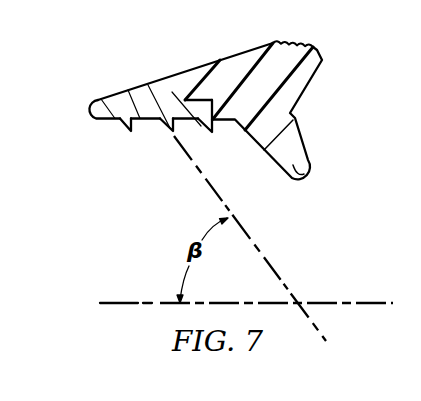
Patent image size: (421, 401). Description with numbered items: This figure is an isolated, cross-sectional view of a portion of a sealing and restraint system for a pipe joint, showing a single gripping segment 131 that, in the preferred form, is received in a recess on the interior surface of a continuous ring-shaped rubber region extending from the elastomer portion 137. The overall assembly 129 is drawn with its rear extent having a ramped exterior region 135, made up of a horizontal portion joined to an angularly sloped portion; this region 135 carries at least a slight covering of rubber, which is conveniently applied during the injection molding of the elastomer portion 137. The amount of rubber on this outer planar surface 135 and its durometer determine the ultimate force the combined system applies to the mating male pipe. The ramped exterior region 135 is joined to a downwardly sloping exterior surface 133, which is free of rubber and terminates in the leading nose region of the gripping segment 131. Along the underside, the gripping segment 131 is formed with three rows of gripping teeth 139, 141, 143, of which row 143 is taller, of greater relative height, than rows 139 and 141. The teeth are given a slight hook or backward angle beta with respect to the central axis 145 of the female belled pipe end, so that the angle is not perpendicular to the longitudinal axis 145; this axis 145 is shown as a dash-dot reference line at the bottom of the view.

The cutting insert body 129 is at (332, 100).
The gripping segment 131 is at (138, 93).
The downwardly sloping exterior surface 133 is at (118, 95).
The ramped exterior region 135 is at (178, 93).
The elastomer portion 137 is at (236, 72).
The gripping teeth row 139 is at (204, 135).
The gripping teeth row 141 is at (172, 134).
The gripping teeth row 143 is at (128, 129).
The central axis 145 is at (366, 304).